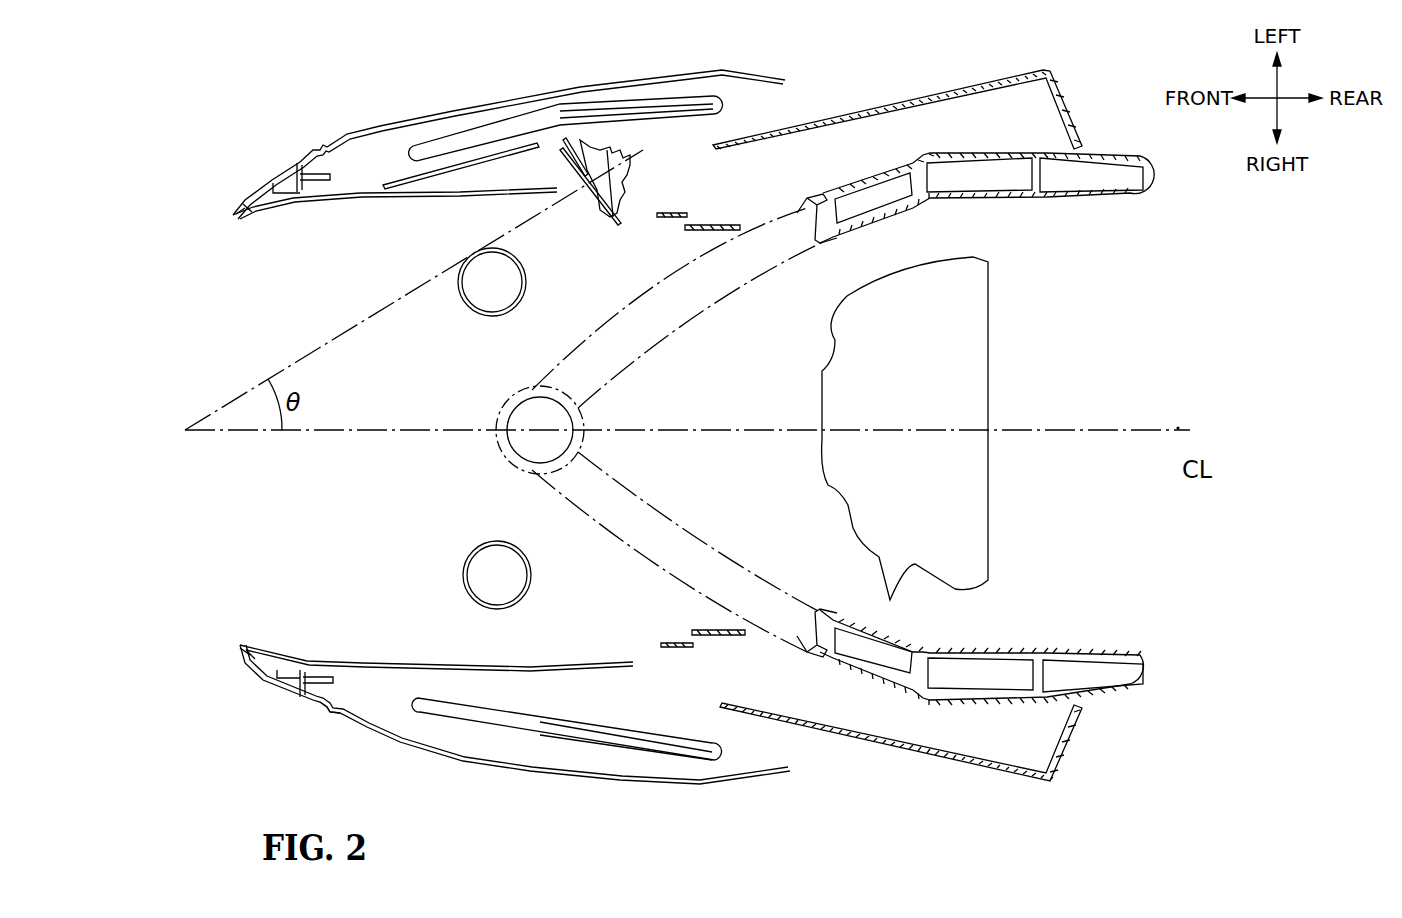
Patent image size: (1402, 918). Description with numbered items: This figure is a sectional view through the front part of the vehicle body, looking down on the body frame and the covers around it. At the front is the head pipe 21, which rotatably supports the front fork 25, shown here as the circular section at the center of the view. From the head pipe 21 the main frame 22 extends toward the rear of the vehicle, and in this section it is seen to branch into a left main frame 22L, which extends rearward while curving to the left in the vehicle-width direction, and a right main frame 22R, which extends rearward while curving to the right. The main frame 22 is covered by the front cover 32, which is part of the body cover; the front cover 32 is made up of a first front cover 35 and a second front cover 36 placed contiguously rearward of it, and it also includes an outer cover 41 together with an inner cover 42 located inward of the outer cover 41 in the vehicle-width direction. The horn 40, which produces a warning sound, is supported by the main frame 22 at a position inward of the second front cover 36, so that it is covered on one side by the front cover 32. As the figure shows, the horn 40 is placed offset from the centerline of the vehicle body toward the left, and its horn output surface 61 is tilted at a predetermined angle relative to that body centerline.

The head pipe 21 is at (587, 437).
The main frame 22 is at (568, 358).
The left main frame 22L is at (1112, 157).
The right main frame 22R is at (1115, 695).
The front fork 25 is at (526, 280).
The front cover 32 is at (236, 159).
The first front cover 35 is at (290, 166).
The second front cover 36 is at (380, 122).
The horn 40 is at (567, 140).
The outer cover 41 is at (339, 724).
The inner cover 42 is at (340, 198).
The horn output surface 61 is at (583, 190).